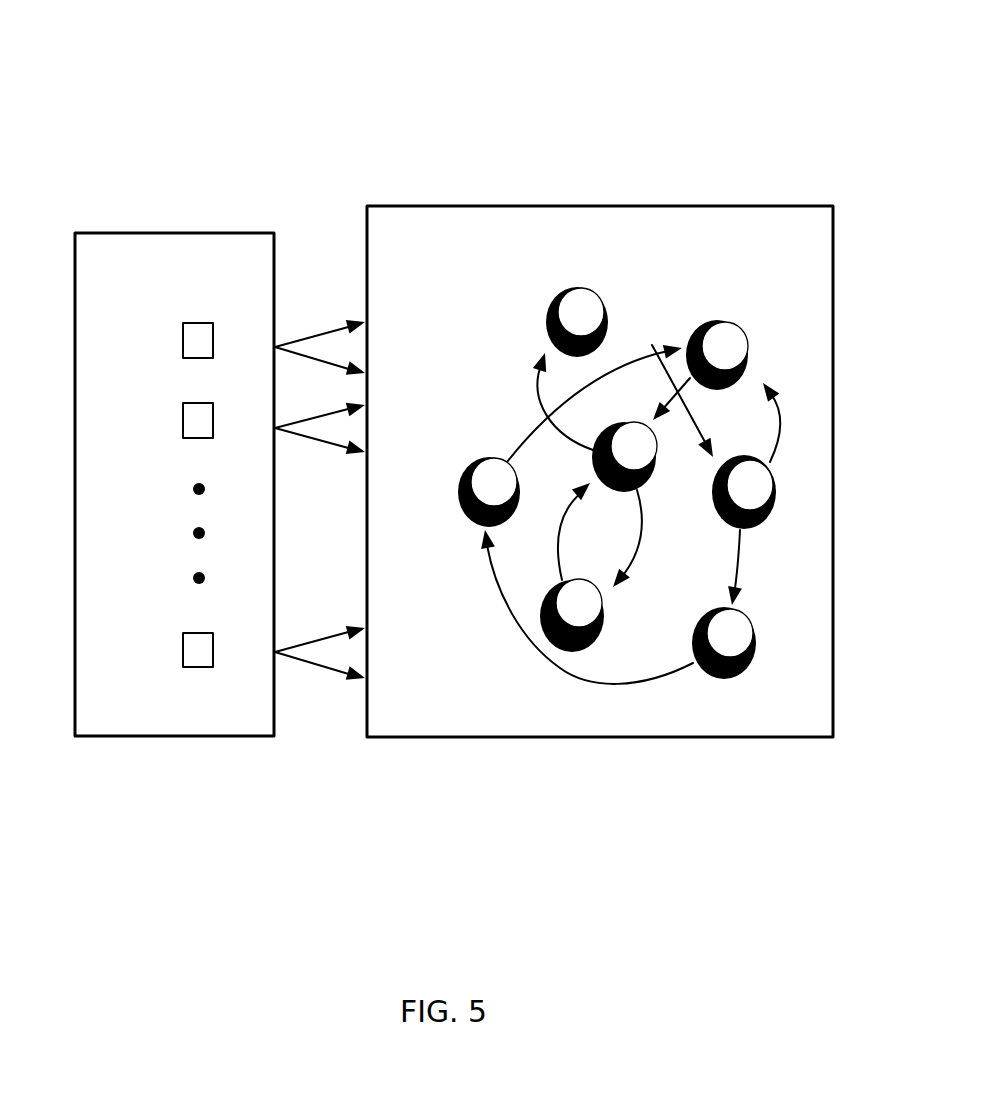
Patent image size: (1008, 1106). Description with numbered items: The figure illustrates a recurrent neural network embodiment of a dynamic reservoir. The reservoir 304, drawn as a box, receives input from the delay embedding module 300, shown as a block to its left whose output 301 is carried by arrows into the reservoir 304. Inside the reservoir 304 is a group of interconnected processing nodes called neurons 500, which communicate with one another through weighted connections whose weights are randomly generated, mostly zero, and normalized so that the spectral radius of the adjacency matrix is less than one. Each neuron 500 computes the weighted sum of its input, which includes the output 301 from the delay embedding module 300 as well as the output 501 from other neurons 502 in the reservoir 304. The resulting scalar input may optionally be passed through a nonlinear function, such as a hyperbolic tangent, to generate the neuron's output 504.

The delay embedding module 300 is at (242, 233).
The output from the delay embedding module 301 is at (325, 325).
The reservoir 304 is at (567, 206).
The neuron 500 is at (743, 320).
The output from other neurons 501 is at (652, 345).
The other neurons 502 is at (463, 517).
The neuron output 504 is at (607, 337).